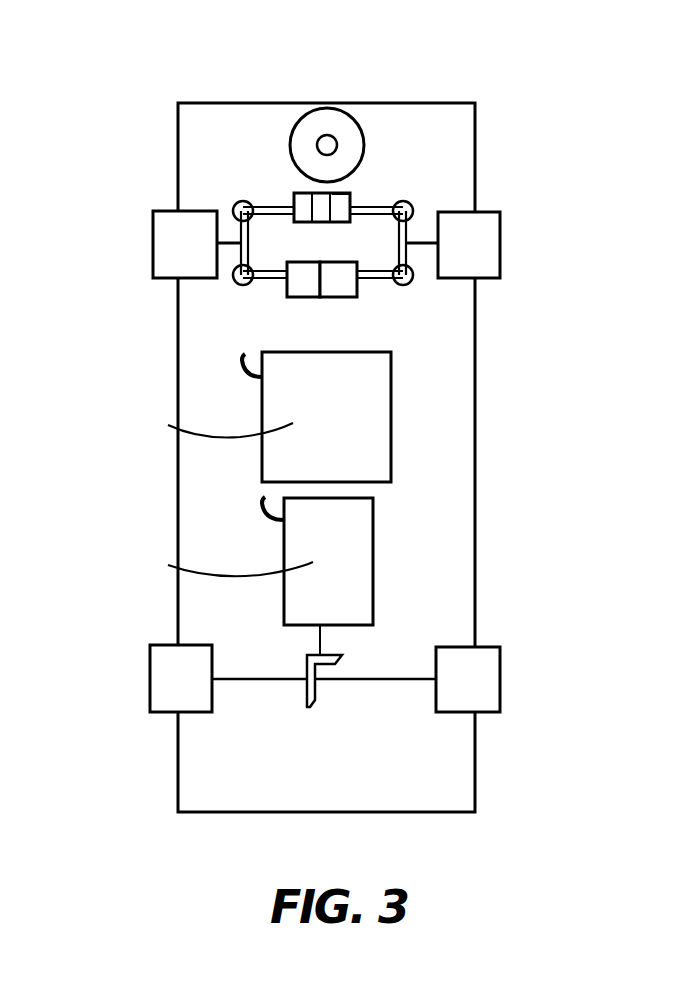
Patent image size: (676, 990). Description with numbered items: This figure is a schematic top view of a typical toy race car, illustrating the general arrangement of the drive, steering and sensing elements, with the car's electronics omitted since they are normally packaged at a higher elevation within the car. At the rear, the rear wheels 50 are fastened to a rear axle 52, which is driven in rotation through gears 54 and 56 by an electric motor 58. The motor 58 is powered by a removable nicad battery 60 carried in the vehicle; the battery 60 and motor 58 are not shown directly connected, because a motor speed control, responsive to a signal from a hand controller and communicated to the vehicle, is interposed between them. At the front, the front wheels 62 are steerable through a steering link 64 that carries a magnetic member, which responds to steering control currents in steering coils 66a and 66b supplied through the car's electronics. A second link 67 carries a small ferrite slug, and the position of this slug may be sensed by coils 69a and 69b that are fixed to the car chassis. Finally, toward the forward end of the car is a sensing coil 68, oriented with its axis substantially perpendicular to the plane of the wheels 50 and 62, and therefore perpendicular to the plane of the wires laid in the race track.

The rear wheels 50 is at (150, 673).
The rear axle 52 is at (258, 678).
The gear 54 is at (305, 690).
The gear 56 is at (323, 655).
The electric motor 58 is at (373, 557).
The removable nicad battery 60 is at (391, 414).
The front wheels 62 is at (152, 243).
The steering link 64 is at (243, 200).
The steering coil 66a is at (290, 193).
The steering coil 66b is at (352, 192).
The second link 67 is at (253, 295).
The sensing coil 68 is at (350, 110).
The coil 69a is at (298, 298).
The coil 69b is at (347, 298).